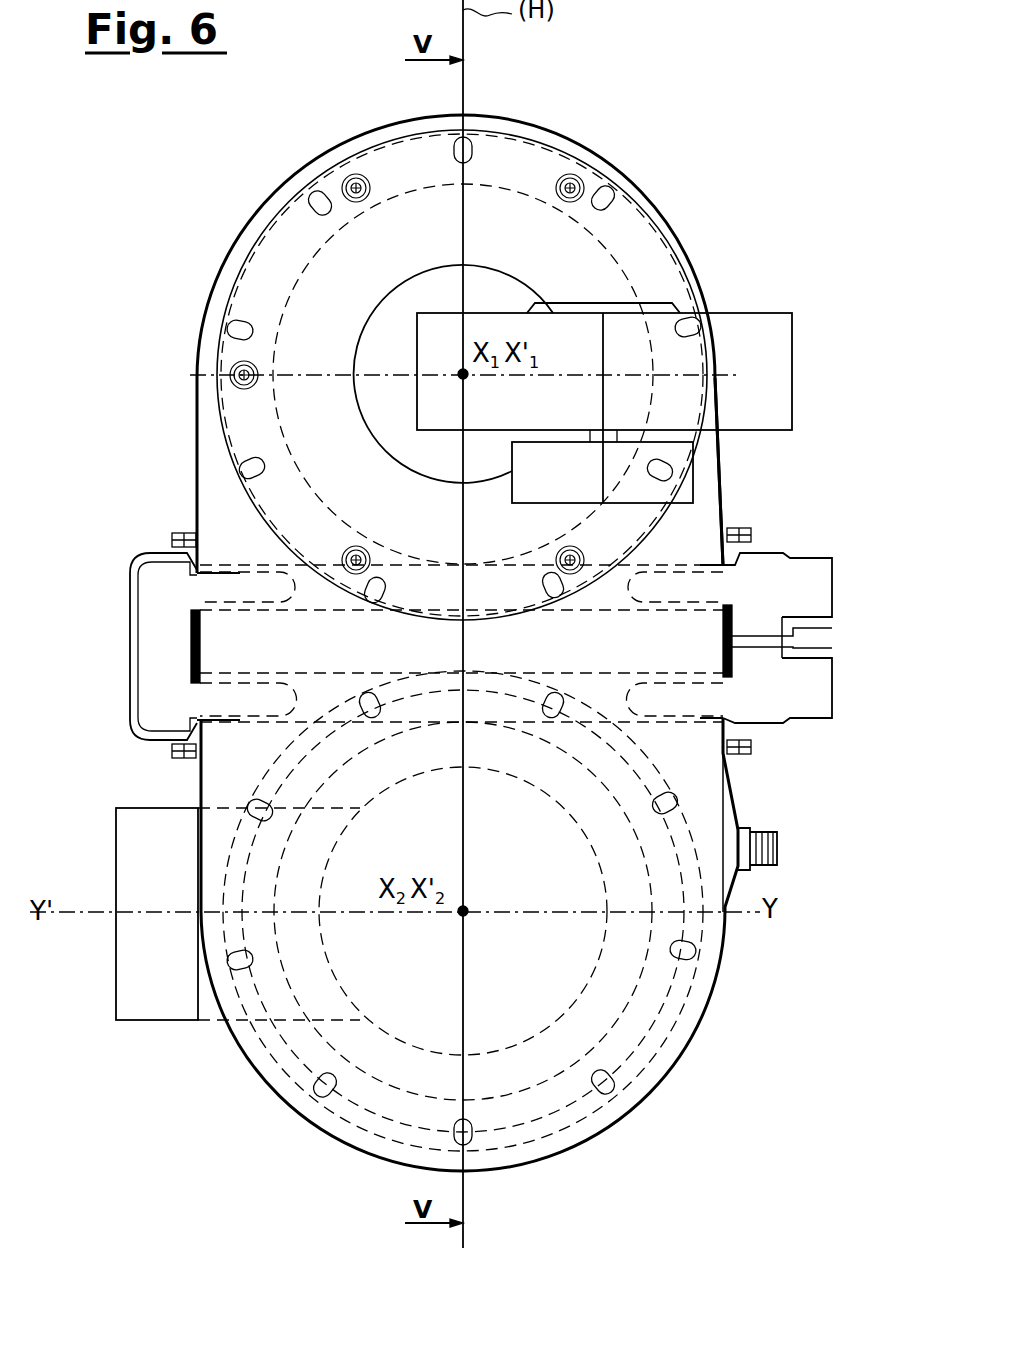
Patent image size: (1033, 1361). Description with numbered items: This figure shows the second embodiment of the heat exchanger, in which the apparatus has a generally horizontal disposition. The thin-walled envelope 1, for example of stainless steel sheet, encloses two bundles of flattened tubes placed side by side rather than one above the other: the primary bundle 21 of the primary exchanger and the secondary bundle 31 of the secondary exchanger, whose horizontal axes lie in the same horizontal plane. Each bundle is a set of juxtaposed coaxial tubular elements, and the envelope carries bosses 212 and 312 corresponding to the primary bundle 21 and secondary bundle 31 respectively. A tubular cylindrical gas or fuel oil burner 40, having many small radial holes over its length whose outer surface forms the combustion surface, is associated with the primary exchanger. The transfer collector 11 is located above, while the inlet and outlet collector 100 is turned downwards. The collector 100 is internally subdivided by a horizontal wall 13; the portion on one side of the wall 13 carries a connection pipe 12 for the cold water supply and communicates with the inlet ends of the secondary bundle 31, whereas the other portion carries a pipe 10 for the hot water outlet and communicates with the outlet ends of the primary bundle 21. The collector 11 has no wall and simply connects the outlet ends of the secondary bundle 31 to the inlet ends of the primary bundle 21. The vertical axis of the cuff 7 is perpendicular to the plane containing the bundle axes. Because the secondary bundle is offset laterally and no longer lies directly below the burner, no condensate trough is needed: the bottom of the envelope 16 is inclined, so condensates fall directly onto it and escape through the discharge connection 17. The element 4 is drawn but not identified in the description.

The envelope 1 is at (604, 156).
The electric motor 4 is at (768, 364).
The cuff 7 is at (142, 990).
The pipe 10 is at (810, 590).
The transfer collector 11 is at (170, 645).
The connection pipe 12 is at (810, 692).
The horizontal wall 13 is at (757, 647).
The bottom of the envelope 16 is at (724, 480).
The discharge connection 17 is at (757, 832).
The primary bundle 21 is at (273, 260).
The secondary bundle 31 is at (373, 1110).
The burner 40 is at (380, 303).
The inlet and outlet collector 100 is at (797, 738).
The bosses 212 is at (248, 452).
The bosses 312 is at (473, 1137).